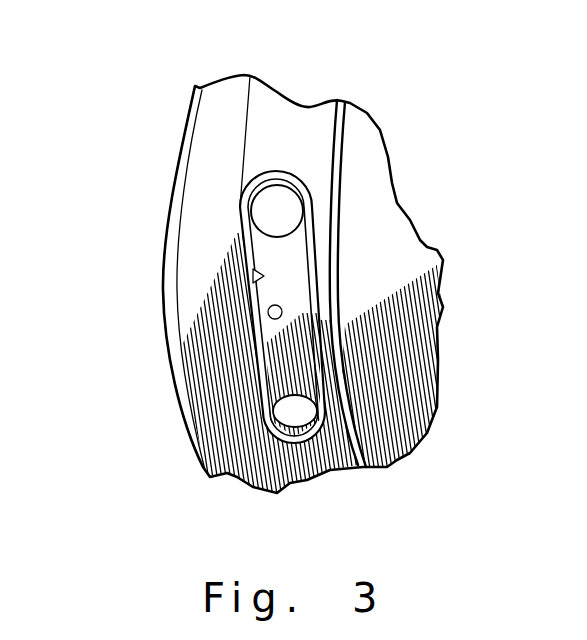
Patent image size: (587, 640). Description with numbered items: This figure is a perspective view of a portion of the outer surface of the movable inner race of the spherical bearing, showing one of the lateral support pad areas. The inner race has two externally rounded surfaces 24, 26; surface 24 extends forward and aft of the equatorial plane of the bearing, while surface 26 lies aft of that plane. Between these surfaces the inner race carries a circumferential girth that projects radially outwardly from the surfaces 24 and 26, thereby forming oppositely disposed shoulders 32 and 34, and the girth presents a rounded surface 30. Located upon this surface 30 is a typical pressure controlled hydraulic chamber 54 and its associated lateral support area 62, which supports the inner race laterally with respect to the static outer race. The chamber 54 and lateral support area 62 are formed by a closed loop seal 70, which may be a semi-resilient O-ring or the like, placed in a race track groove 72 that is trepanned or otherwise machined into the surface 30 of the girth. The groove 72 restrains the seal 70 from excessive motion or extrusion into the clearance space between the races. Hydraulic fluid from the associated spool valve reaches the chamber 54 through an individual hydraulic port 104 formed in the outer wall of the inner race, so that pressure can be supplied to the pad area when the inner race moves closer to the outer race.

The externally rounded surface 24 is at (207, 187).
The externally rounded surface 26 is at (402, 398).
The rounded surface 30 is at (276, 127).
The shoulder 32 is at (242, 138).
The shoulder 34 is at (334, 163).
The hydraulic chamber 54 is at (283, 343).
The lateral support pad area 62 is at (190, 375).
The closed loop seal 70 is at (307, 263).
The race track groove 72 is at (253, 277).
The hydraulic port 104 is at (283, 312).